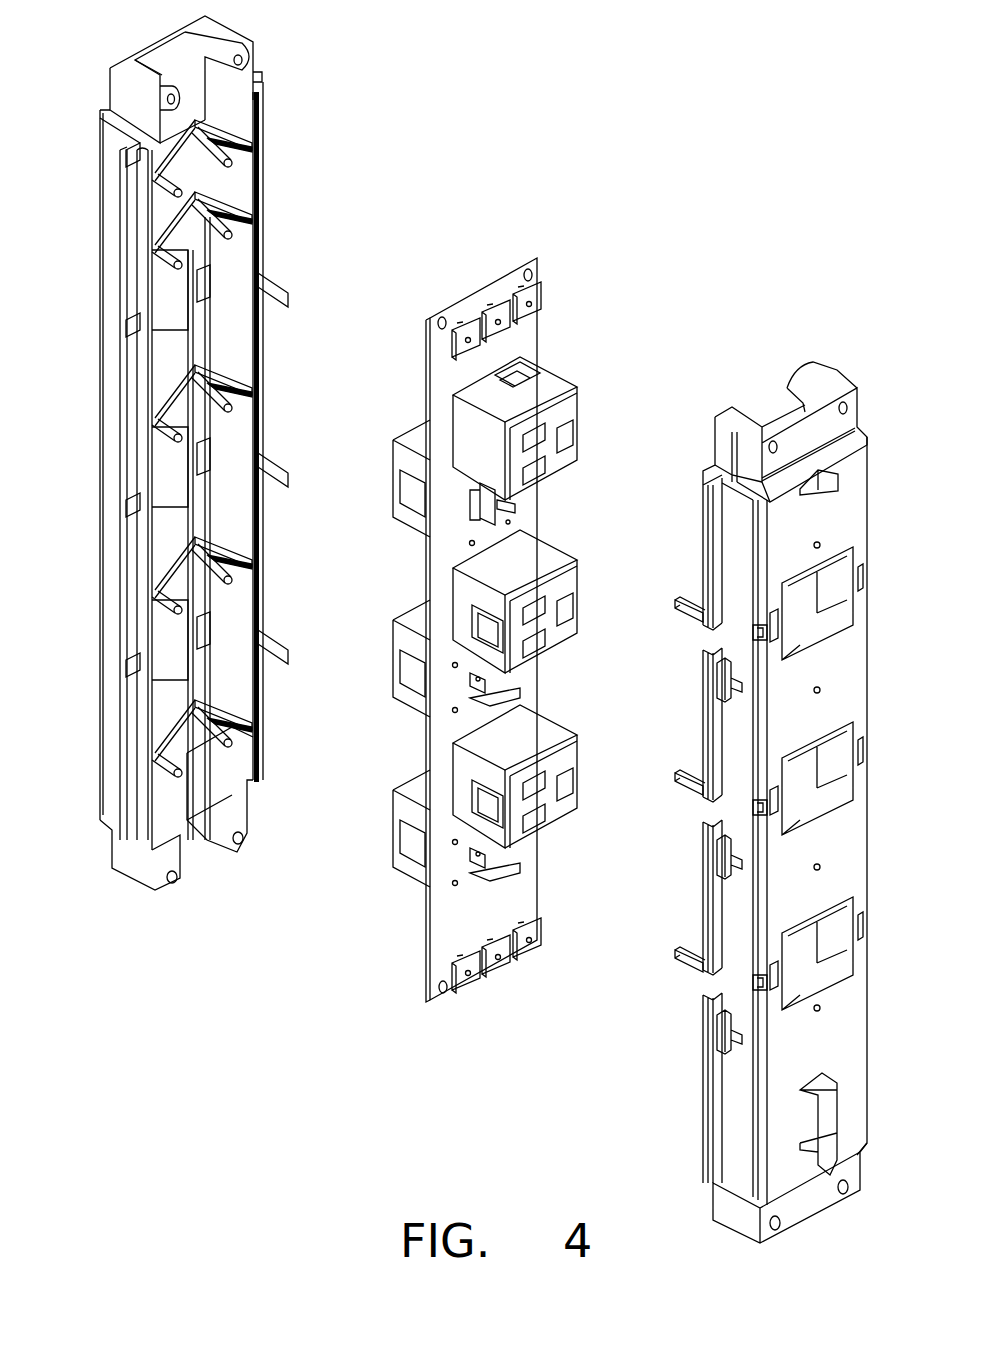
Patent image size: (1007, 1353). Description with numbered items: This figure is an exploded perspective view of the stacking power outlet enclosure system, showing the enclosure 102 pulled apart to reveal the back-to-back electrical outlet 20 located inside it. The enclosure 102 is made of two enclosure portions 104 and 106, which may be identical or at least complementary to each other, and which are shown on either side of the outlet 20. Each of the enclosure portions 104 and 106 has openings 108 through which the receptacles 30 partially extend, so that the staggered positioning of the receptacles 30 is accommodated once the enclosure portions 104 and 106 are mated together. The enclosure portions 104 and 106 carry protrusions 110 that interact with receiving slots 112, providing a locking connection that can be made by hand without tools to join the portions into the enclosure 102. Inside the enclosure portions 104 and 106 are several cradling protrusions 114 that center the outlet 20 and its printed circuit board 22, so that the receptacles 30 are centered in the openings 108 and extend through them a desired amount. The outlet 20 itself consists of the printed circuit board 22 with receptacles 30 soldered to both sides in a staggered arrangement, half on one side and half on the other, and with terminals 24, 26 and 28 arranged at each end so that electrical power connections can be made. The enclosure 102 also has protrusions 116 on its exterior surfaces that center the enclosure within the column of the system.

The enclosure 102 is at (690, 192).
The enclosure portion 104 is at (868, 702).
The enclosure portion 106 is at (100, 362).
The openings 108 is at (178, 486).
The protrusions 110 is at (282, 292).
The receiving slots 112 is at (135, 648).
The cradling protrusions 114 is at (187, 220).
The protrusions 116 is at (840, 490).
The outlet 20 is at (586, 346).
The printed circuit board 22 is at (430, 382).
The terminal 24 is at (458, 327).
The terminal 26 is at (495, 302).
The terminal 28 is at (537, 295).
The receptacles 30 is at (578, 408).